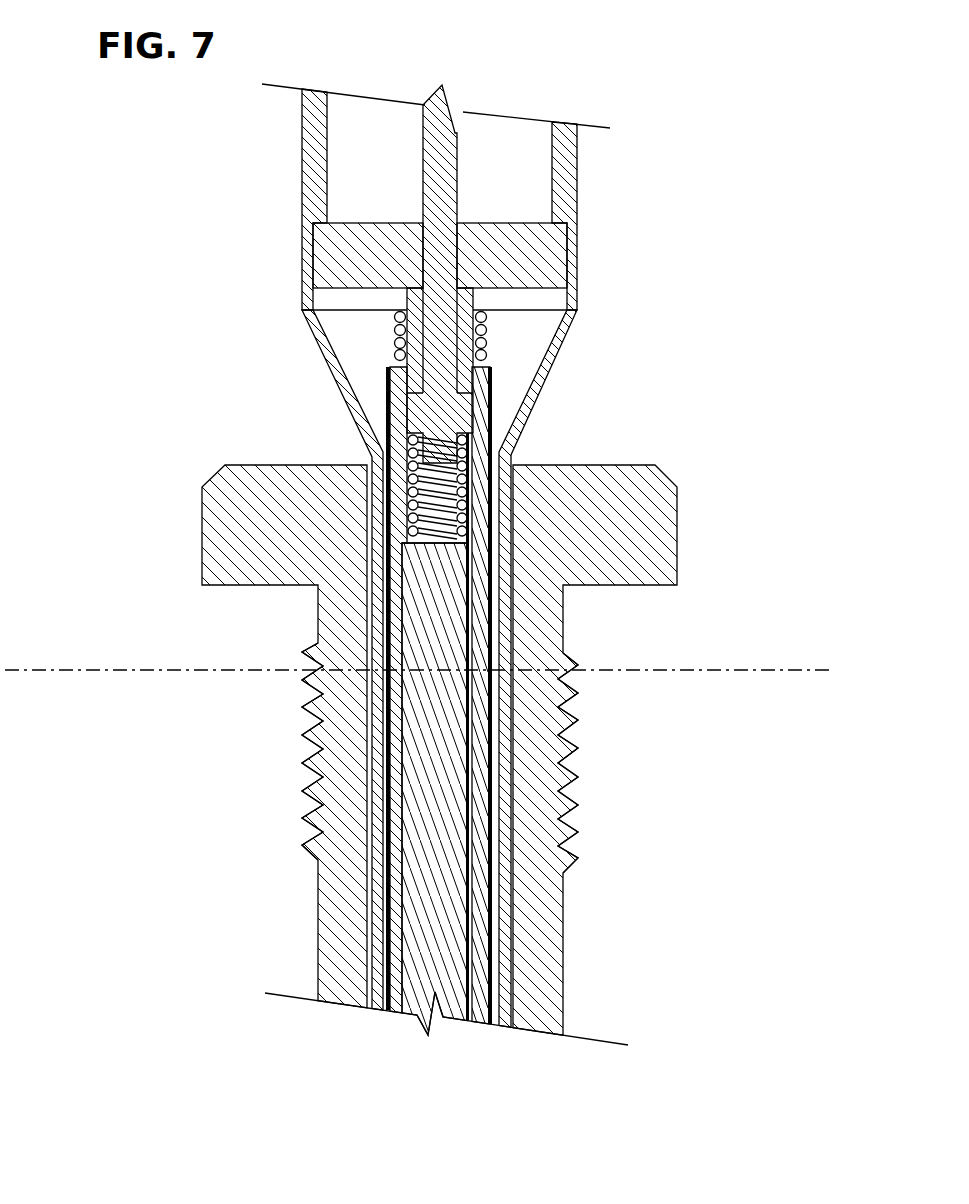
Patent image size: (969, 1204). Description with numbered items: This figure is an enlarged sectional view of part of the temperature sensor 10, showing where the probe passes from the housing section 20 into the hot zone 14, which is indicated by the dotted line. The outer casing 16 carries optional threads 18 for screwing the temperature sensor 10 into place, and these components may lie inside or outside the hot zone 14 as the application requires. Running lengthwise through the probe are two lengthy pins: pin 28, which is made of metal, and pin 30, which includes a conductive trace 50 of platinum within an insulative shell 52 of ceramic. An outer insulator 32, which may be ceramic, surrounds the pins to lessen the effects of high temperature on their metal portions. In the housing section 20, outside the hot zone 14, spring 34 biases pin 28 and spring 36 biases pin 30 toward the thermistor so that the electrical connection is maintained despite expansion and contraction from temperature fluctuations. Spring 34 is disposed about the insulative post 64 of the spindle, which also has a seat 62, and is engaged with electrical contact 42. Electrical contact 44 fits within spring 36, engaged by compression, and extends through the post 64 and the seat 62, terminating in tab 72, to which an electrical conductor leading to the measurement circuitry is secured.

The temperature sensor 10 is at (138, 445).
The hot zone 14 is at (72, 915).
The outer casing 16 is at (188, 785).
The threads 18 is at (310, 740).
The housing section 20 is at (712, 333).
The pin 28 is at (397, 939).
The pin 30 is at (430, 895).
The outer insulator 32 is at (480, 949).
The spring 34 is at (487, 340).
The spring 36 is at (472, 477).
The electrical contact 42 is at (480, 298).
The electrical contact 44 is at (450, 413).
The conductive trace 50 is at (470, 793).
The insulative shell 52 is at (475, 688).
The seat 62 is at (567, 310).
The post 64 is at (402, 355).
The tab 72 is at (420, 287).